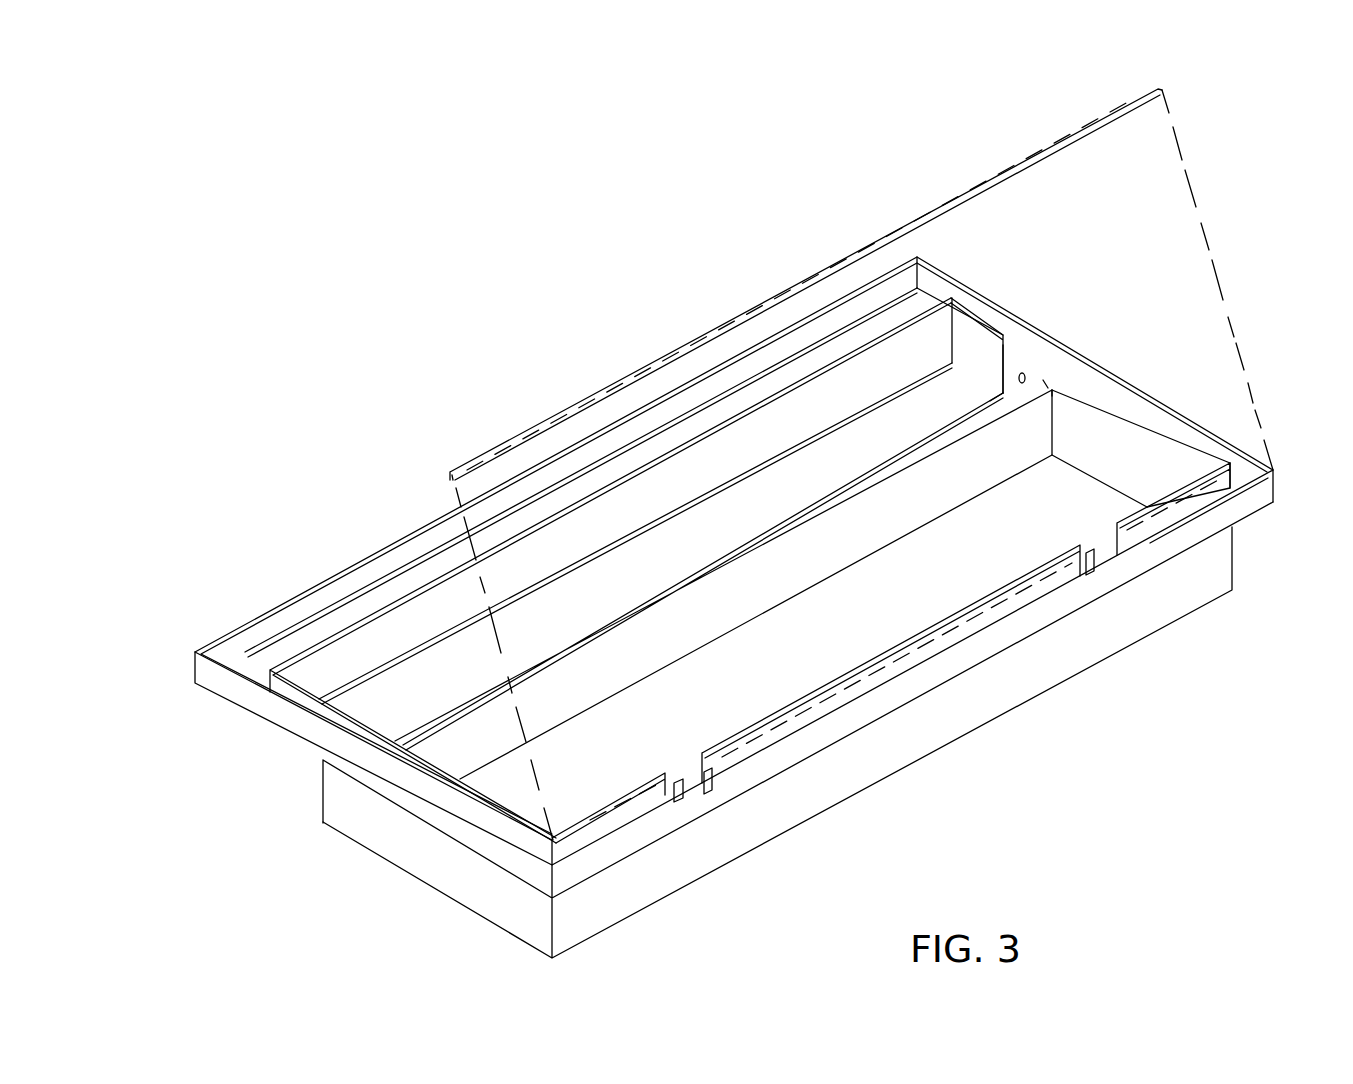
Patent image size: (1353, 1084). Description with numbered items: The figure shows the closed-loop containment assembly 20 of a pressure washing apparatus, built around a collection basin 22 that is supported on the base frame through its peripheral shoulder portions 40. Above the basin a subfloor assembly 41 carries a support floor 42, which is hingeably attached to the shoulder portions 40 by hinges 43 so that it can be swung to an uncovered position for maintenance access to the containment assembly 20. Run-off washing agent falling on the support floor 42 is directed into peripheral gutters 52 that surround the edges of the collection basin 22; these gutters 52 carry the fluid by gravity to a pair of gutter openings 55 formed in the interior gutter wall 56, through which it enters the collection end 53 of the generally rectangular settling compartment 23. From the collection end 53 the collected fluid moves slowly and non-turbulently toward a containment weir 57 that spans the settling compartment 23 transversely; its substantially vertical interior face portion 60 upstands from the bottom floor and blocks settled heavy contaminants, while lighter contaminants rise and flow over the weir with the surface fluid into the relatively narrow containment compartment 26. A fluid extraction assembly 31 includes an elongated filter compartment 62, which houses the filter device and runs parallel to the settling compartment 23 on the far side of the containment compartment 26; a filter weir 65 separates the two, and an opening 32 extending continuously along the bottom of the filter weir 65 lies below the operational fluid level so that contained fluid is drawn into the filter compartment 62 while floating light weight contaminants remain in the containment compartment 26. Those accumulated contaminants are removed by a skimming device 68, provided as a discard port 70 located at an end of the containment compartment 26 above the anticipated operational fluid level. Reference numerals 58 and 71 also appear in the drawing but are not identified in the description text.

The containment assembly 20 is at (300, 355).
The collection basin 22 is at (367, 850).
The settling compartment 23 is at (764, 660).
The containment compartment 26 is at (375, 710).
The fluid extraction assembly 31 is at (372, 652).
The opening 32 is at (973, 415).
The peripheral shoulder portions 40 is at (215, 706).
The subfloor assembly 41 is at (1190, 178).
The support floor 42 is at (560, 413).
The hinges 43 is at (705, 797).
The peripheral gutters 52 is at (250, 667).
The collection end 53 is at (1193, 460).
The gutter openings 55 is at (707, 773).
The interior gutter wall 56 is at (827, 707).
The containment weir 57 is at (1057, 415).
The partition end 58 is at (1052, 388).
The interior face portion 60 is at (920, 490).
The filter compartment 62 is at (965, 323).
The filter weir 65 is at (670, 510).
The skimming device 68 is at (1025, 372).
The discard port 70 is at (1043, 382).
The wall face 71 is at (1015, 365).